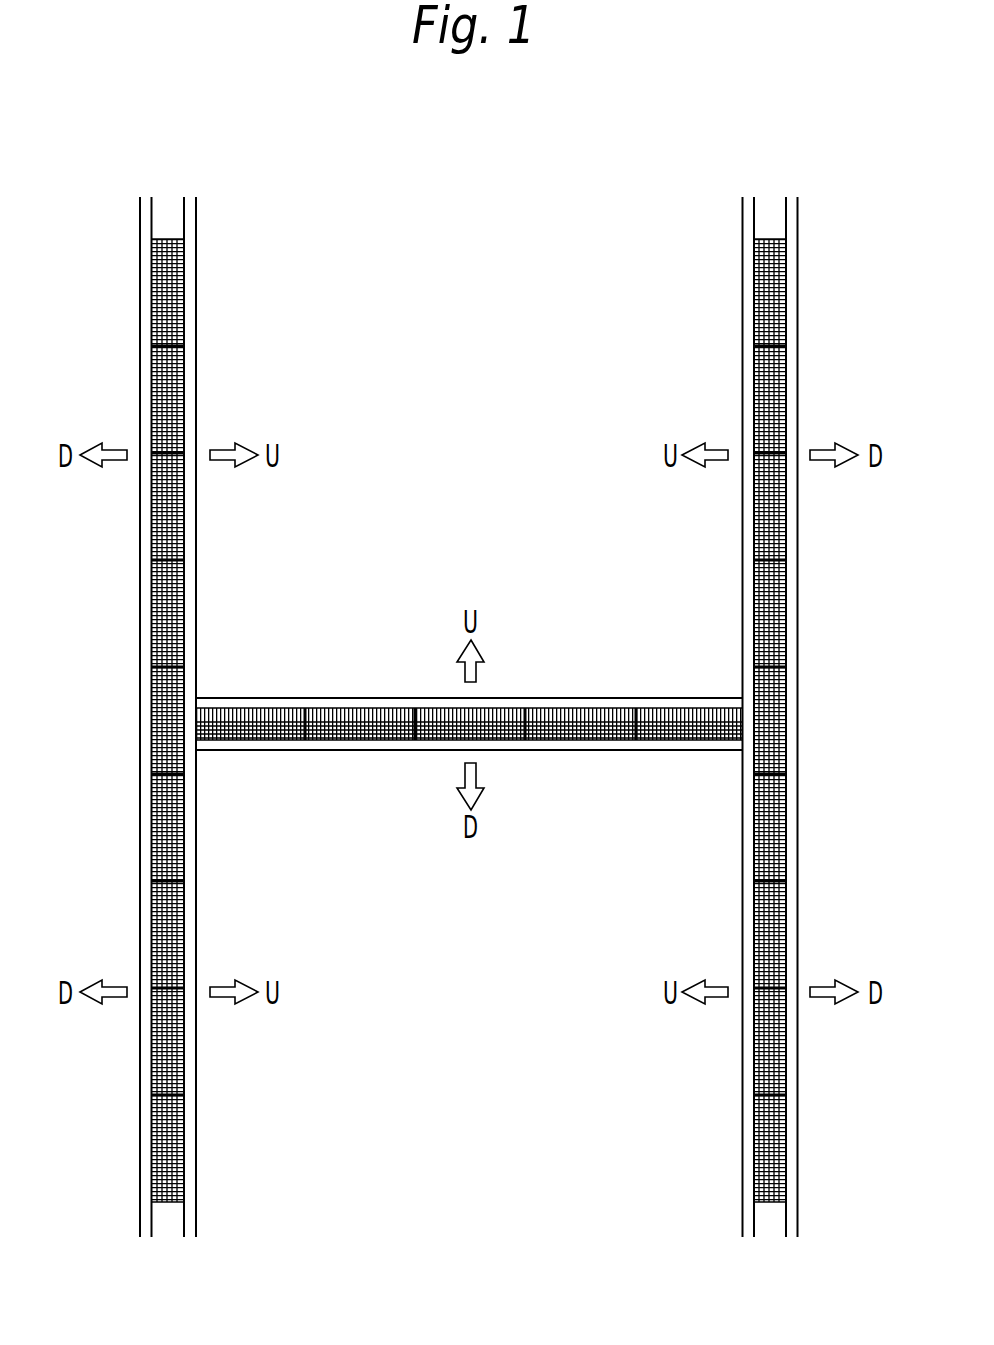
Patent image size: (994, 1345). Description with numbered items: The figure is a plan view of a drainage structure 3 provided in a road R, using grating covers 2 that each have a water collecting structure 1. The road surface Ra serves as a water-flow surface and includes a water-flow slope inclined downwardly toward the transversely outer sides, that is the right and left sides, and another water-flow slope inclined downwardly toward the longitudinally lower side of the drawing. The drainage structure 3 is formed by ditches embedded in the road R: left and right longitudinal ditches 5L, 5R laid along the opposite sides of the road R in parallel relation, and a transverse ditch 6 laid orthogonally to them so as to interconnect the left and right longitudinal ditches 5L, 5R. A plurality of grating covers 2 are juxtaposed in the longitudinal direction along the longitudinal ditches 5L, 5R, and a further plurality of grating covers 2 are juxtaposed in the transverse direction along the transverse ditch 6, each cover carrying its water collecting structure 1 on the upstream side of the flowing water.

The water collecting structure 1 is at (181, 307).
The grating cover 2 is at (152, 270).
The drainage structure 3 is at (717, 246).
The left longitudinal ditch 5L is at (139, 348).
The right longitudinal ditch 5R is at (800, 348).
The transverse ditch 6 is at (605, 753).
The road R is at (503, 211).
The road surface Ra is at (497, 410).